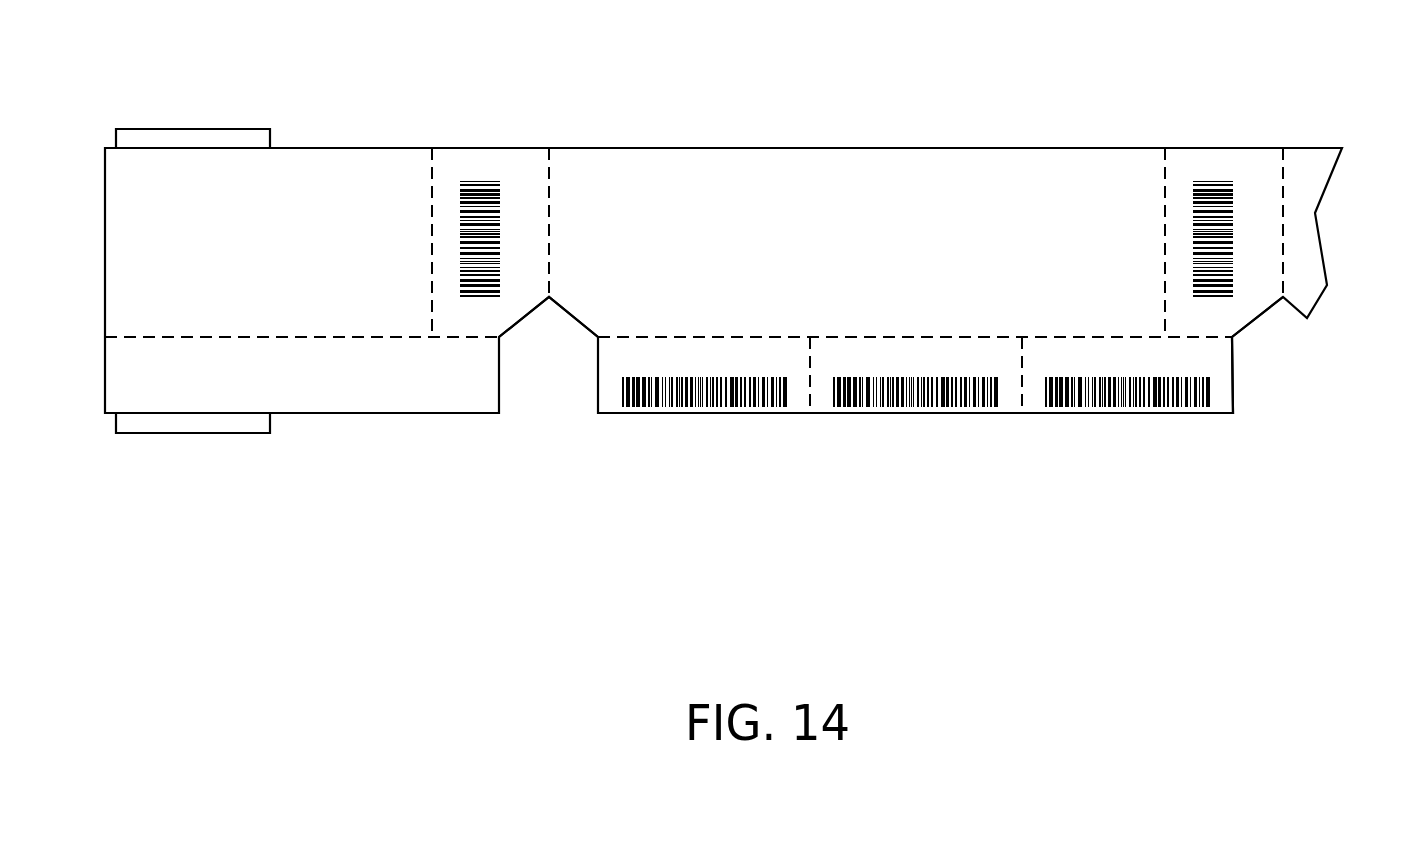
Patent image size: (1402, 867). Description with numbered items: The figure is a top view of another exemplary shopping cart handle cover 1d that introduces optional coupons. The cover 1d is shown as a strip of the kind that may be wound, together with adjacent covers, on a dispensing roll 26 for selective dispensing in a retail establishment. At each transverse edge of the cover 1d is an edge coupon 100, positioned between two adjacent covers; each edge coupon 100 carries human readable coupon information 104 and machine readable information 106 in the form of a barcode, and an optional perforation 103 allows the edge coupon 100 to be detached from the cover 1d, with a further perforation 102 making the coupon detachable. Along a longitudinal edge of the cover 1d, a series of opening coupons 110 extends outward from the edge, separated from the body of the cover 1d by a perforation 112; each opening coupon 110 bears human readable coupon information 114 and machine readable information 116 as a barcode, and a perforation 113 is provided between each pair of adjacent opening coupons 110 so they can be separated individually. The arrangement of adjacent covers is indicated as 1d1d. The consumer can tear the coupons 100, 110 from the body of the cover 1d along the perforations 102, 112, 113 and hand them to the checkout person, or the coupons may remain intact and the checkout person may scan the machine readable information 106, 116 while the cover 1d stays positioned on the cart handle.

The dispensing roll 26 is at (192, 129).
The cover 1d is at (375, 128).
The coupon label assembly 1d1d is at (1107, 128).
The edge coupon 100 is at (523, 128).
The machine readable information 106 is at (477, 170).
The perforation 103 is at (432, 218).
The perforation 102 is at (550, 218).
The perforation 112 is at (243, 337).
The human readable coupon information 104 is at (520, 290).
The opening coupon 110 is at (722, 325).
The human readable coupon information 114 is at (760, 352).
The perforation 113 is at (812, 378).
The machine readable information 116 is at (622, 407).